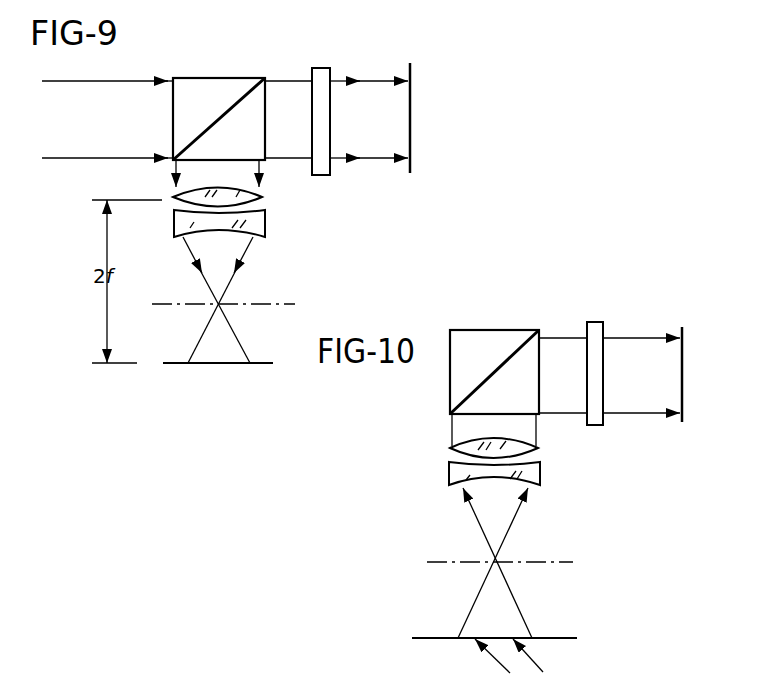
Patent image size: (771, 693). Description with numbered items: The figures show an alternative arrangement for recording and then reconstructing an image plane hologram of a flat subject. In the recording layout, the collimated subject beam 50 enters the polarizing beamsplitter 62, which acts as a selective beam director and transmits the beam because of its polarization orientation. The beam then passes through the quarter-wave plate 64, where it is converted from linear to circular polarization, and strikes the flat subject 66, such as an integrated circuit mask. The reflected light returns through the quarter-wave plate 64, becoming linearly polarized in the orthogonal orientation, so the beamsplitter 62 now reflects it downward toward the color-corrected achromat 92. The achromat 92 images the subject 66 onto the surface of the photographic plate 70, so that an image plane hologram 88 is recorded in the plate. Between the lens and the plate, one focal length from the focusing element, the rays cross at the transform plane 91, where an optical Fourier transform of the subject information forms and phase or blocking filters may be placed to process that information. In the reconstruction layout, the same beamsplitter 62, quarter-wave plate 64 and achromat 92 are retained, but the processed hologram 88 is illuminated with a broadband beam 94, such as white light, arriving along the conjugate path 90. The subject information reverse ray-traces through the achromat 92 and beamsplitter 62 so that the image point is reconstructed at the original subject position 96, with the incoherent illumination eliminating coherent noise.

In FIG. 9, the subject beam 50 is at (103, 125).
In FIG. 9, the polarizing beamsplitter 62 is at (223, 78).
In FIG. 10, the polarizing beamsplitter 62 is at (489, 330).
In FIG. 9, the quarter-wave plate 64 is at (330, 74).
In FIG. 10, the quarter-wave plate 64 is at (603, 329).
In FIG. 9, the subject 66 is at (411, 72).
In FIG. 9, the achromat 92 is at (282, 197).
In FIG. 10, the achromat 92 is at (556, 473).
In FIG. 9, the transform plane 91 is at (263, 302).
In FIG. 10, the transform plane 91 is at (557, 561).
In FIG. 9, the photographic plate 70 is at (263, 363).
In FIG. 10, the original subject position 96 is at (683, 348).
In FIG. 10, the hologram 88 is at (560, 638).
In FIG. 10, the broadband beam 94 is at (488, 661).
In FIG. 10, the conjugate path 90 is at (530, 660).